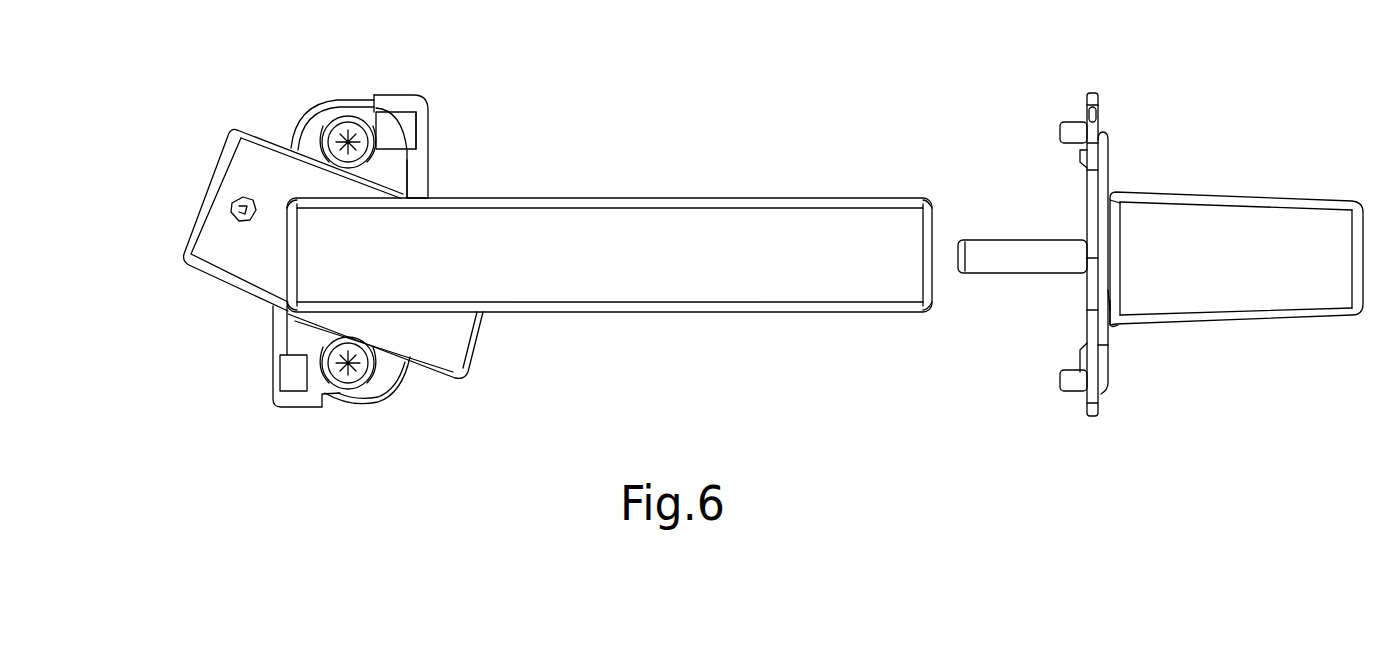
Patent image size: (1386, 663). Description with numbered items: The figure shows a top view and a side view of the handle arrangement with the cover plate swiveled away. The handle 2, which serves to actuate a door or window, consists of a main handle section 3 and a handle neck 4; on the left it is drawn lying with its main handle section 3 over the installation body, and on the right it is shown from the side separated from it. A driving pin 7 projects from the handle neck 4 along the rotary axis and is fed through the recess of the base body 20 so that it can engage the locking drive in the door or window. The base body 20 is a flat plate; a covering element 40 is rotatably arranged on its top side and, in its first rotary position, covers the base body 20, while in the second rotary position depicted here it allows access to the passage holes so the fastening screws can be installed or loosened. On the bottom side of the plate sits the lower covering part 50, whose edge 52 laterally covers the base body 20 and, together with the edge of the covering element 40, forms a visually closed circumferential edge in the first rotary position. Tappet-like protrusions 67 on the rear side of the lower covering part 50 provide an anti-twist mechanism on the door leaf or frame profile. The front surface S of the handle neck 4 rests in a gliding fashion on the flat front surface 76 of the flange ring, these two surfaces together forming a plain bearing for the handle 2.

The handle 2 is at (1223, 232).
The main handle section 3 is at (707, 230).
The handle neck 4 is at (1168, 283).
The driving pin 7 is at (1007, 262).
The base body 20 is at (383, 153).
The covering element 40 is at (265, 158).
The lower covering part 50 is at (415, 175).
The edge 52 is at (283, 333).
The tappet-like protrusions 67 is at (1077, 383).
The front surface 76 is at (1113, 297).
The front surface S is at (1110, 223).